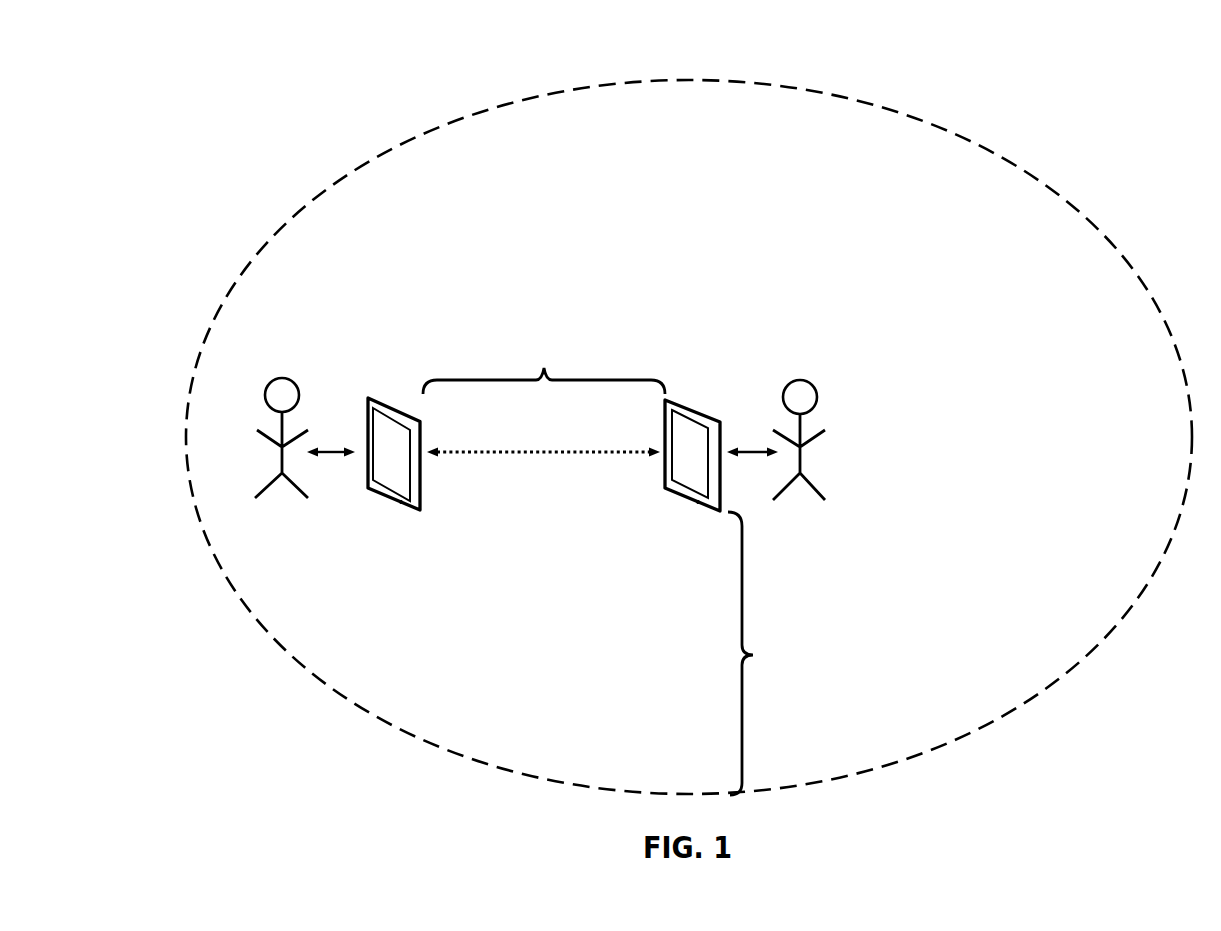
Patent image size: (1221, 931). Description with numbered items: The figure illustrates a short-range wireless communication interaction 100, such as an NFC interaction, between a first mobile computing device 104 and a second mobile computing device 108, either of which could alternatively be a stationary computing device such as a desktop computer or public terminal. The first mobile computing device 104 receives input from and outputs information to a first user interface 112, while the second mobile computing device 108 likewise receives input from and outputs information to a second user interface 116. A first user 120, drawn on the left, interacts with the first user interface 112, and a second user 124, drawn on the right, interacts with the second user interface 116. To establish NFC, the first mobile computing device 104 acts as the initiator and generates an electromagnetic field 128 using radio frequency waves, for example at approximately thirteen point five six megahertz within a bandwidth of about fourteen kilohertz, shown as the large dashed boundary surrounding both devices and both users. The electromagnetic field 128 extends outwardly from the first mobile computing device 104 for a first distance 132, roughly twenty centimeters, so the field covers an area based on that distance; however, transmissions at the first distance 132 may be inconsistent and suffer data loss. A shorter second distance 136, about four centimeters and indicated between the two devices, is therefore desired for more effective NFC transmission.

The short-range wireless communication interaction 100 is at (214, 72).
The first mobile computing device 104 is at (400, 448).
The second mobile computing device 108 is at (689, 447).
The first user interface 112 is at (400, 478).
The second user interface 116 is at (686, 472).
The first user 120 is at (300, 524).
The second user 124 is at (821, 357).
The electromagnetic field 128 is at (698, 79).
The first distance 132 is at (760, 653).
The second distance 136 is at (544, 400).